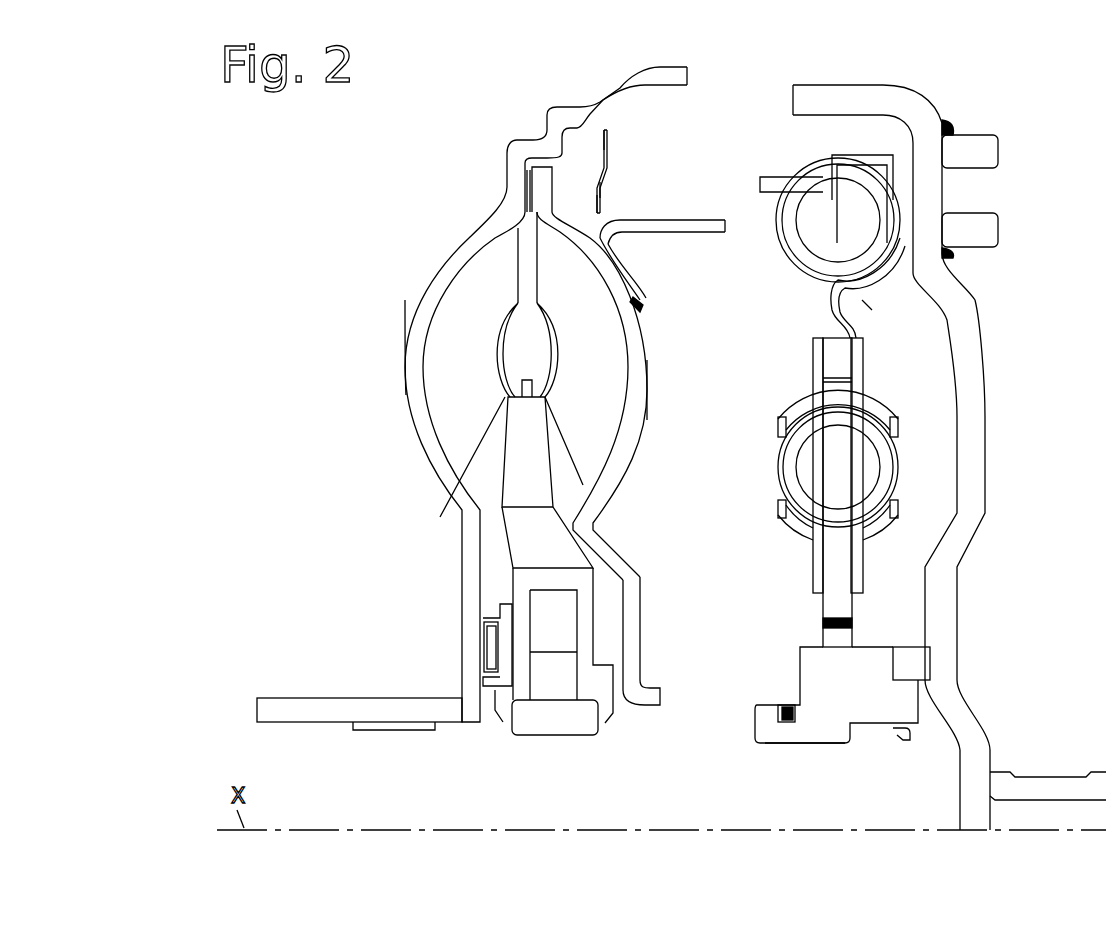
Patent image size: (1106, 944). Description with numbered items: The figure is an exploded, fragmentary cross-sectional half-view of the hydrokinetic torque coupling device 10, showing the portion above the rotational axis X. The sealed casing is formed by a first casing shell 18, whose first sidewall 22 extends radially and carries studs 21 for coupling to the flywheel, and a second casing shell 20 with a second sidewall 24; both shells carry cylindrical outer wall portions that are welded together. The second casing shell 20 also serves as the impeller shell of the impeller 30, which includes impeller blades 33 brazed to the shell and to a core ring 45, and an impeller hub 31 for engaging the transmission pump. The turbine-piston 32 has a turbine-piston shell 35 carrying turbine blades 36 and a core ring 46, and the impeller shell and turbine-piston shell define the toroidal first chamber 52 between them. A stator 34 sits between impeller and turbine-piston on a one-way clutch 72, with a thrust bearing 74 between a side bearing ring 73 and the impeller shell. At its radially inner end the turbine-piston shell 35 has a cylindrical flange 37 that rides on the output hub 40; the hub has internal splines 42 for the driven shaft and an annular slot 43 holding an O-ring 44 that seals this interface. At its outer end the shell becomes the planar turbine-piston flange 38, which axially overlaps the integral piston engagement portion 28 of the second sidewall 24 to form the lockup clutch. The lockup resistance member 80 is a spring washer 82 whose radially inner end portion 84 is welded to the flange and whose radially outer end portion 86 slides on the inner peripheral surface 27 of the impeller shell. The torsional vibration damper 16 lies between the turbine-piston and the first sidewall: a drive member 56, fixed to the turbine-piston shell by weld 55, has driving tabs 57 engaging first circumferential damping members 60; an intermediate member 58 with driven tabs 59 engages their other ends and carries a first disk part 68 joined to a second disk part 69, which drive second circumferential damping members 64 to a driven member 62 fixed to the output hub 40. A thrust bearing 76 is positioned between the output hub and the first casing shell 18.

The hydrokinetic torque coupling device 10 is at (1014, 94).
The torsional vibration damper 16 is at (884, 305).
The first casing shell 18 is at (986, 416).
The second casing shell 20 is at (407, 412).
The studs 21 is at (990, 152).
The first sidewall 22 is at (935, 195).
The second sidewall 24 is at (414, 377).
The axially inner peripheral surface 27 is at (580, 122).
The piston engagement portion 28 is at (516, 192).
The impeller 30 is at (412, 312).
The impeller hub 31 is at (293, 698).
The turbine-piston 32 is at (648, 414).
The impeller blades 33 is at (455, 355).
The stator 34 is at (500, 477).
The turbine-piston shell 35 is at (613, 462).
The turbine blades 36 is at (600, 355).
The cylindrical flange 37 is at (650, 708).
The turbine-piston flange 38 is at (542, 193).
The output hub 40 is at (866, 697).
The internal splines 42 is at (830, 745).
The annular slot 43 is at (788, 721).
The O-ring 44 is at (780, 724).
The core ring 45 is at (506, 320).
The core ring 46 is at (553, 326).
The first chamber 52 is at (529, 286).
The weld 55 is at (647, 300).
The drive member 56 is at (627, 278).
The driving tabs 57 is at (713, 222).
The intermediate member 58 is at (873, 293).
The driven tabs 59 is at (773, 180).
The first circumferential damping members 60 is at (805, 263).
The driven member 62 is at (842, 607).
The second circumferential damping members 64 is at (893, 465).
The first disk part 68 is at (865, 371).
The second disk part 69 is at (793, 407).
The one-way clutch 72 is at (548, 614).
The side bearing ring 73 is at (502, 607).
The thrust bearing 74 is at (490, 655).
The thrust bearing 76 is at (917, 663).
The lockup resistance member 80 is at (603, 190).
The spring washer 82 is at (610, 170).
The radially inner end portion 84 is at (613, 212).
The radially outer end portion 86 is at (611, 138).